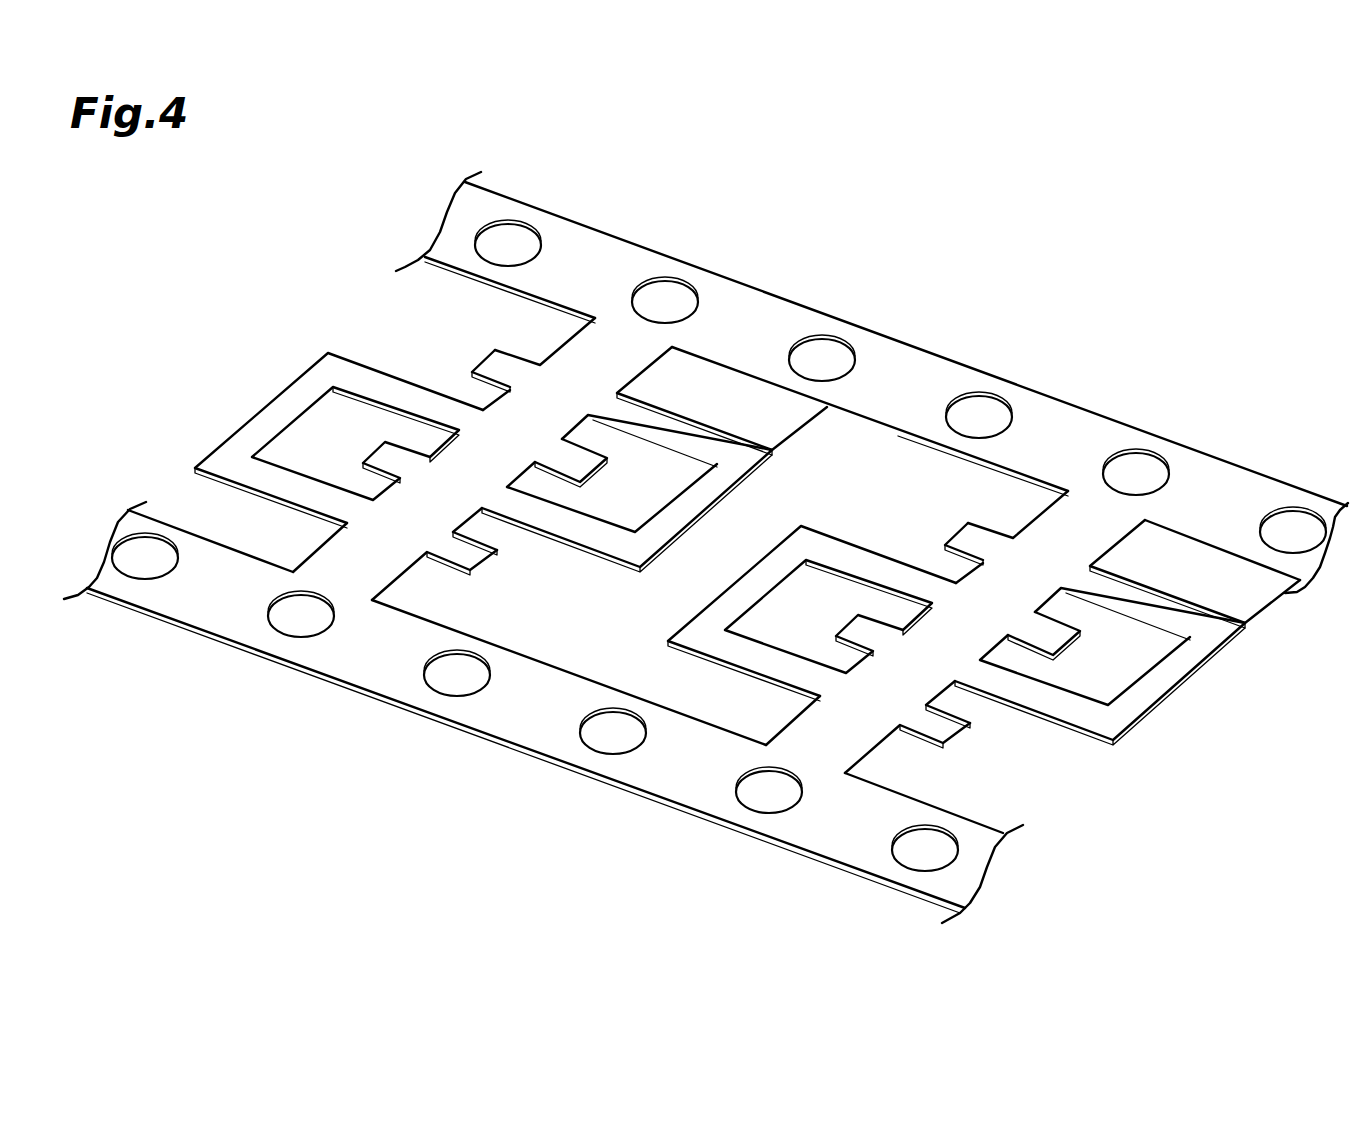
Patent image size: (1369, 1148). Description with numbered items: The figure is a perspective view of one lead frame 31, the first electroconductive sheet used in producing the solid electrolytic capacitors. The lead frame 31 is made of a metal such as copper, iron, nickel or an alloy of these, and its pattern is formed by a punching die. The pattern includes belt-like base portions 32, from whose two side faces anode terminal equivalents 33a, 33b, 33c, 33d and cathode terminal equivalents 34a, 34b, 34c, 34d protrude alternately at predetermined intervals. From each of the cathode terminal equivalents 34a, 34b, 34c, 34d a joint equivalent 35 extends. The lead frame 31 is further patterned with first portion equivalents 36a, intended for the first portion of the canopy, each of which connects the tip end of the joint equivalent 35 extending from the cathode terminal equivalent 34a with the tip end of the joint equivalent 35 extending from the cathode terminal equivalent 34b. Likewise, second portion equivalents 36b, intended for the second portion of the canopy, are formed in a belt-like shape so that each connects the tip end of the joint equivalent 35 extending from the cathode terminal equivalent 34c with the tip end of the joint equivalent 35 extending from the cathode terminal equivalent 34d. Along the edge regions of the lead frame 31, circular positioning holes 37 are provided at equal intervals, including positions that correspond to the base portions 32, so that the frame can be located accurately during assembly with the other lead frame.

The lead frame 31 is at (358, 268).
The base portion 32 is at (563, 350).
The anode terminal equivalent 33a is at (458, 552).
The anode terminal equivalent 33b is at (575, 457).
The anode terminal equivalent 33c is at (382, 455).
The anode terminal equivalent 33d is at (493, 355).
The cathode terminal equivalent 34a is at (522, 505).
The cathode terminal equivalent 34b is at (622, 410).
The cathode terminal equivalent 34c is at (322, 510).
The cathode terminal equivalent 34d is at (442, 412).
The joint equivalent 35 is at (368, 378).
The first portion equivalent 36a is at (723, 475).
The second portion equivalent 36b is at (262, 405).
The positioning hole 37 is at (668, 292).